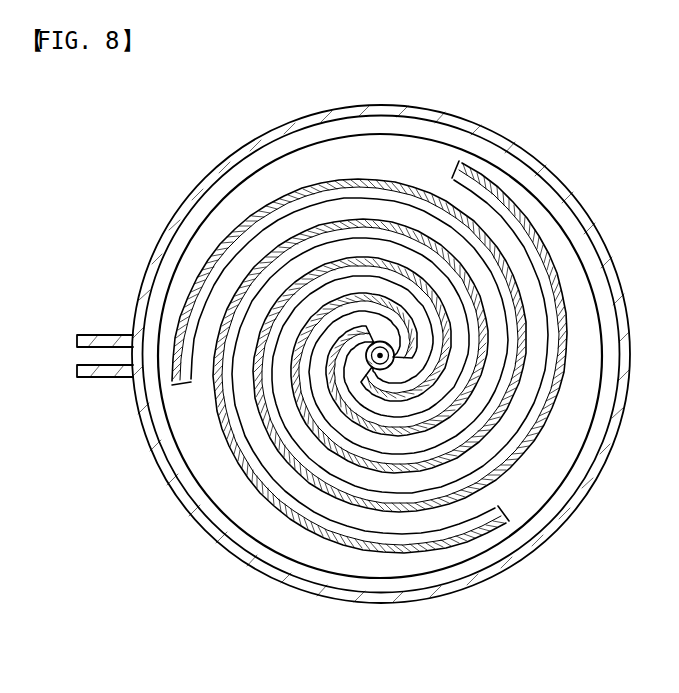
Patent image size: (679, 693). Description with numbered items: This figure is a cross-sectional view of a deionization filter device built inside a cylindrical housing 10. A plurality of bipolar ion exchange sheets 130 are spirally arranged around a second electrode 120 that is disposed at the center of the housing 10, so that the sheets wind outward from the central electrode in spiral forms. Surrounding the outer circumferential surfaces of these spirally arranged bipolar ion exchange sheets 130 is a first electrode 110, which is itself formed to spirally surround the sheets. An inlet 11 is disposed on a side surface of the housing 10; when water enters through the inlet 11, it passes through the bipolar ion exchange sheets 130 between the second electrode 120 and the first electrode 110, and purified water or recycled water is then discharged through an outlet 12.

The housing 10 is at (190, 513).
The inlet 11 is at (97, 377).
The first electrode 110 is at (273, 568).
The second electrode 120 is at (392, 342).
The outlet 12 is at (395, 364).
The bipolar ion exchange sheets 130 is at (382, 549).